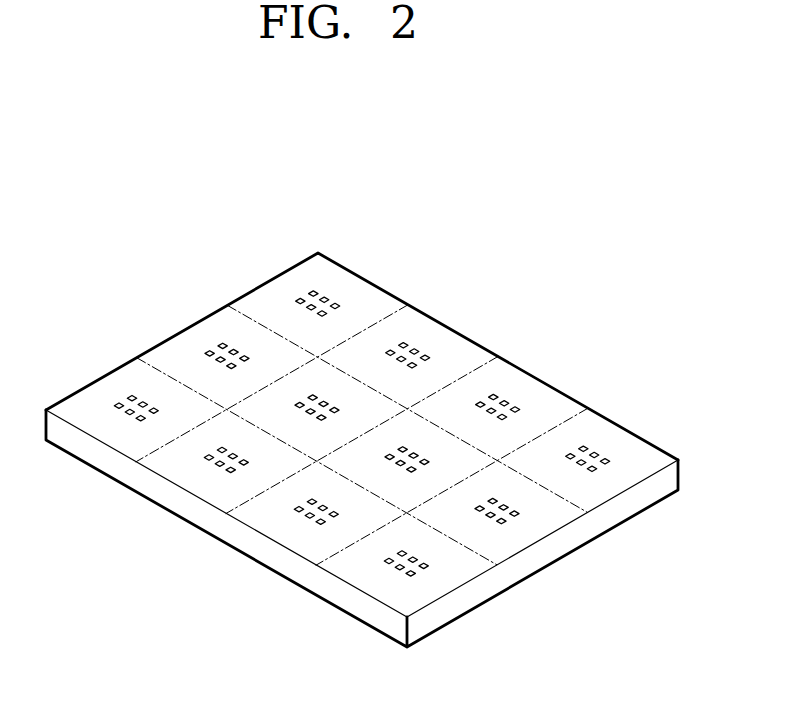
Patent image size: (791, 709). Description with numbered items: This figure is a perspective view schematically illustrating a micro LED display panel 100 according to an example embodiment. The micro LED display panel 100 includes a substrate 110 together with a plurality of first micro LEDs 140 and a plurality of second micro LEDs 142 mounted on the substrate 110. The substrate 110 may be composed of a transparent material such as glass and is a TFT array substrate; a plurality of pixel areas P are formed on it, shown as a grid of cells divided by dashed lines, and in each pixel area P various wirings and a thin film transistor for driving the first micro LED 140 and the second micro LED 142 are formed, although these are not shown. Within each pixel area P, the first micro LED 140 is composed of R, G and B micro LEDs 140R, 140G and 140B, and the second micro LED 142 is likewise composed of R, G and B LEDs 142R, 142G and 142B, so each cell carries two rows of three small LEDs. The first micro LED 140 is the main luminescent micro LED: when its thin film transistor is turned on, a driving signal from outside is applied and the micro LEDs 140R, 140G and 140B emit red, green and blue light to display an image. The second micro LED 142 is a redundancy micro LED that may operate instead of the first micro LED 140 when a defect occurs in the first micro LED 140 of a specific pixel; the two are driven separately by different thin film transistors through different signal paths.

The micro LED display panel 100 is at (359, 407).
The substrate 110 is at (297, 585).
The first micro LED 140 is at (385, 236).
The R micro LED of first micro LED 140R is at (314, 291).
The G micro LED of first micro LED 140G is at (325, 297).
The B micro LED of first micro LED 140B is at (336, 303).
The second micro LED 142 is at (144, 516).
The R LED of second micro LED 142R is at (205, 458).
The G LED of second micro LED 142G is at (216, 465).
The B LED of second micro LED 142B is at (228, 472).
The pixel area P is at (470, 549).